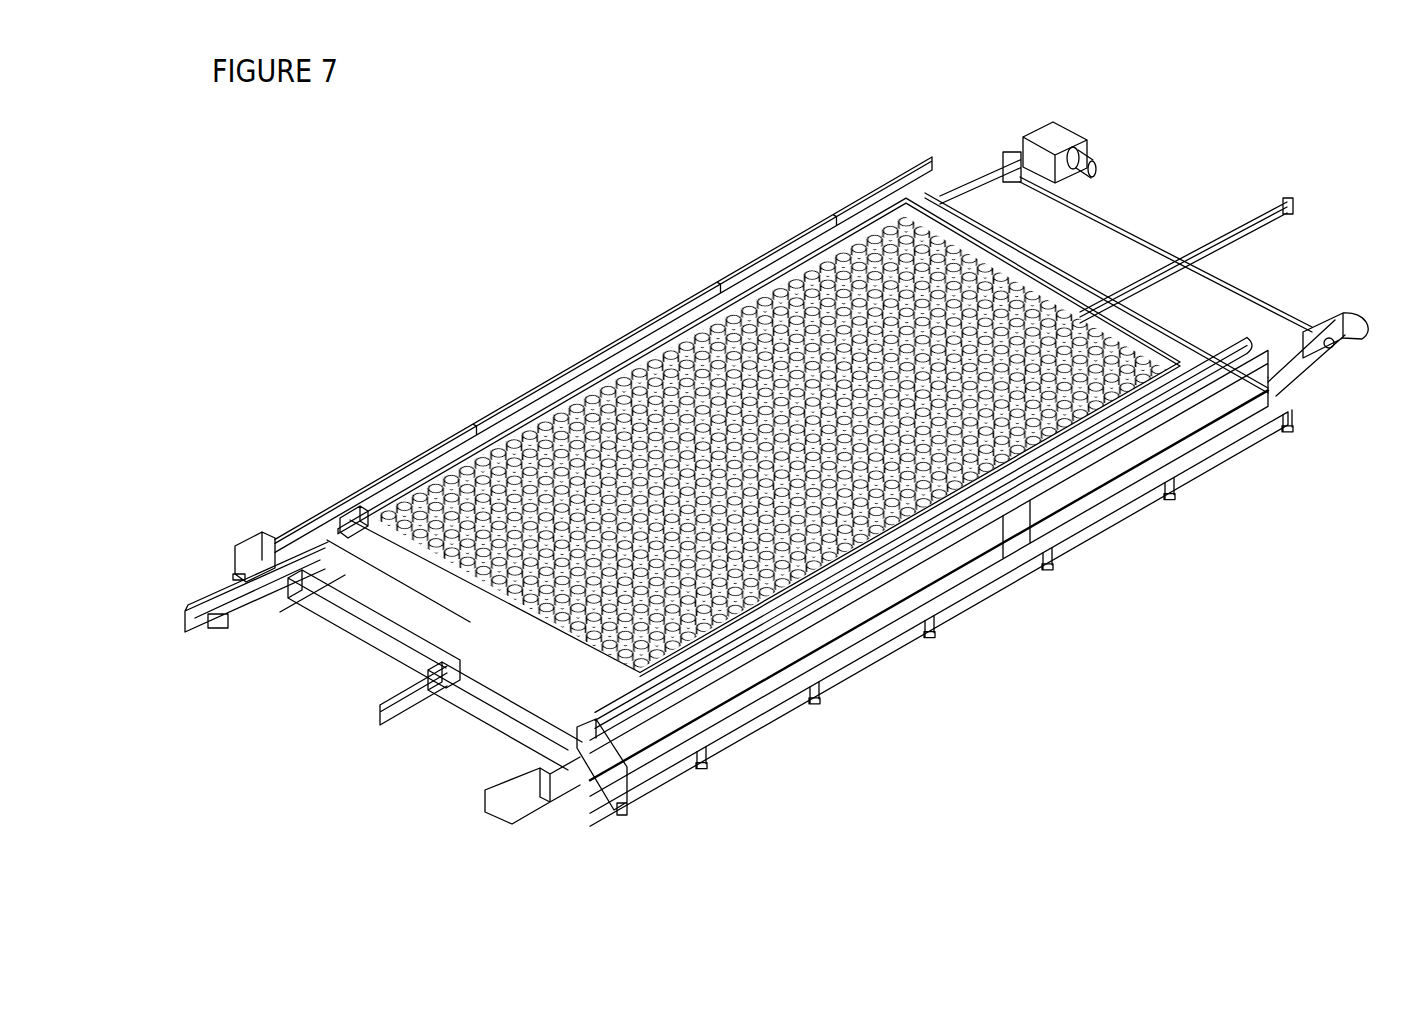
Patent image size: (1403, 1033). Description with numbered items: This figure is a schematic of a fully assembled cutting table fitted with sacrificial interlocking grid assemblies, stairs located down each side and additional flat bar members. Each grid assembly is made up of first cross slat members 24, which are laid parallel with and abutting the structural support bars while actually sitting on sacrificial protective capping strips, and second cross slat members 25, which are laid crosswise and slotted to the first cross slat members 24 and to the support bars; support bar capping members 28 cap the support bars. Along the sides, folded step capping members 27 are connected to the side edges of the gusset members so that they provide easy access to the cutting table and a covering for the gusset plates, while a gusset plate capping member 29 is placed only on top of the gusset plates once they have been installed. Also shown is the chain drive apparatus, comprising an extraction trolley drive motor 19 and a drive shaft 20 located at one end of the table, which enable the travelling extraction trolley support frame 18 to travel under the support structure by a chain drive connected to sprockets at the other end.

The extraction trolley support frame 18 is at (373, 603).
The extraction trolley drive motor 19 is at (1053, 141).
The drive shaft 20 is at (1213, 273).
The first cross slat members 24 is at (260, 350).
The second cross slat members 25 is at (450, 477).
The folded step capping member 27 is at (260, 543).
The support bar capping member 28 is at (608, 337).
The gusset plate capping member 29 is at (1163, 400).